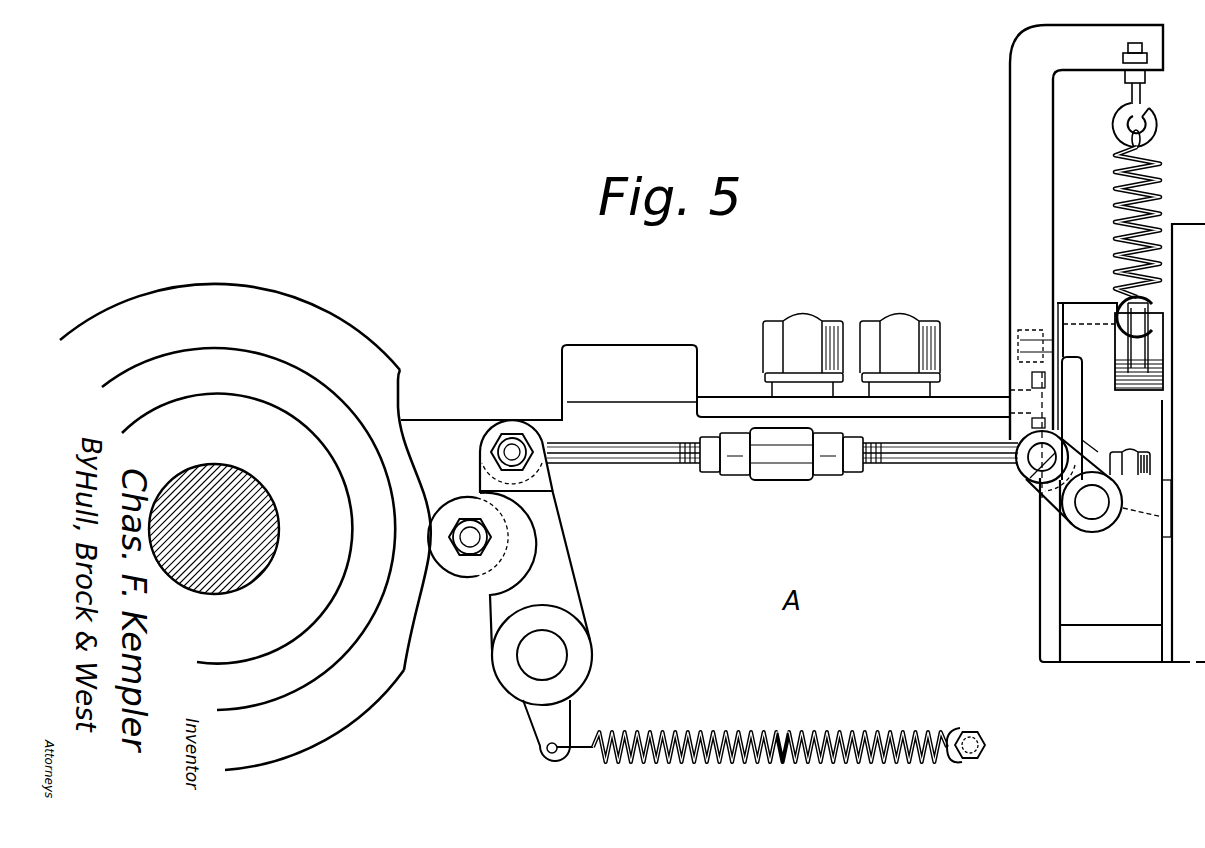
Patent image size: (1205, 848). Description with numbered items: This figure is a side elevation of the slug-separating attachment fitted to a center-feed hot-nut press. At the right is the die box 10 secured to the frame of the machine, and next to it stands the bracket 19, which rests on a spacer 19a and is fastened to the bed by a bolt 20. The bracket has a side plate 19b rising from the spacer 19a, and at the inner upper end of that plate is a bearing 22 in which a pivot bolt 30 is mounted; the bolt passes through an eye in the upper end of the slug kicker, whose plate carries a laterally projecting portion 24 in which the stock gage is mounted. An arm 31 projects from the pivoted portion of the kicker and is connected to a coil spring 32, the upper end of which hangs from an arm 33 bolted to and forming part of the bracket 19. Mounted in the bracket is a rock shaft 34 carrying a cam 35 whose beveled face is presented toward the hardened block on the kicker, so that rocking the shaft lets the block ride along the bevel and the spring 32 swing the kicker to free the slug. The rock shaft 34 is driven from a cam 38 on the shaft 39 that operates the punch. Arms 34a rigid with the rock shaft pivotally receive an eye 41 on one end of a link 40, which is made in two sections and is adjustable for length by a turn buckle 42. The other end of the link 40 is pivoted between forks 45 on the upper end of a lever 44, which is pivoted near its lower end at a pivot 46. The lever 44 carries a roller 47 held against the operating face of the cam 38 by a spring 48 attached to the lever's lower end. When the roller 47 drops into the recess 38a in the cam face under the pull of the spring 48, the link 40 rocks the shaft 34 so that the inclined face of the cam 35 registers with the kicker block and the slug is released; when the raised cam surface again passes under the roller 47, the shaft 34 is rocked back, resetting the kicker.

The die box 10 is at (1107, 246).
The bracket 19 is at (1122, 570).
The spacer 19a is at (1111, 643).
The side plate 19b is at (1078, 408).
The bolt 20 is at (1133, 455).
The bearing 22 is at (1088, 307).
The laterally projecting portion 24 is at (1148, 408).
The pivot bolt 30 is at (1117, 372).
The arm 31 is at (1147, 358).
The coil spring 32 is at (1160, 193).
The arm 33 is at (1122, 93).
The rock shaft 34 is at (1078, 507).
The arms 34a is at (1053, 478).
The cam 35 is at (1125, 438).
The cam 38 is at (232, 527).
The recess 38a is at (413, 430).
The shaft 39 is at (213, 529).
The link 40 is at (893, 461).
The eye 41 is at (1028, 483).
The turn buckle 42 is at (800, 468).
The lever 44 is at (558, 563).
The forks 45 is at (548, 476).
The pivot 46 is at (550, 652).
The roller 47 is at (468, 577).
The spring 48 is at (813, 731).